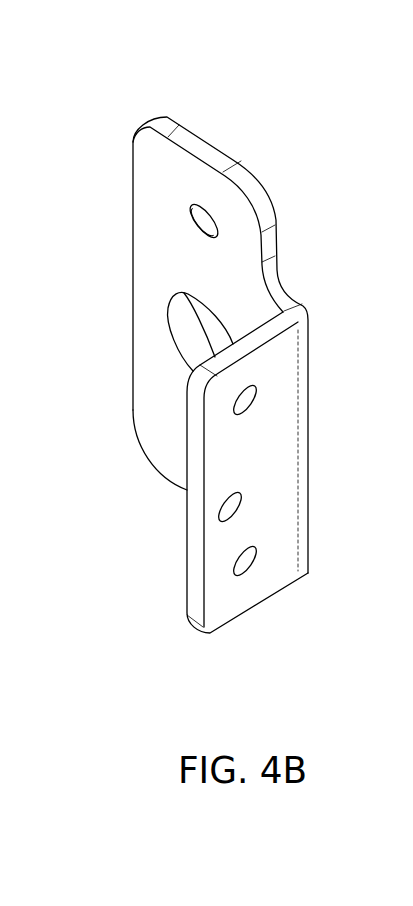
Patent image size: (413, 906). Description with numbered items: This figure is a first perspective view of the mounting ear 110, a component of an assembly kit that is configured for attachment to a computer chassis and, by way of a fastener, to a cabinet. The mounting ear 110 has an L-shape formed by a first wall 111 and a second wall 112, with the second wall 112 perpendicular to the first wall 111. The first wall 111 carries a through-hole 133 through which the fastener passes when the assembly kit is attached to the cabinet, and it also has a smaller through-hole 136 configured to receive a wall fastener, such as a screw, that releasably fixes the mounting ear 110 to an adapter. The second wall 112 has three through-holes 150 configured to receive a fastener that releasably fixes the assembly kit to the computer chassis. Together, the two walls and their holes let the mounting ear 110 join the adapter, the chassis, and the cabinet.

The mounting ear 110 is at (299, 88).
The first wall 111 is at (150, 166).
The second wall 112 is at (250, 590).
The through-hole 133 is at (180, 322).
The through-hole 136 is at (200, 207).
The through-holes 150 is at (245, 560).